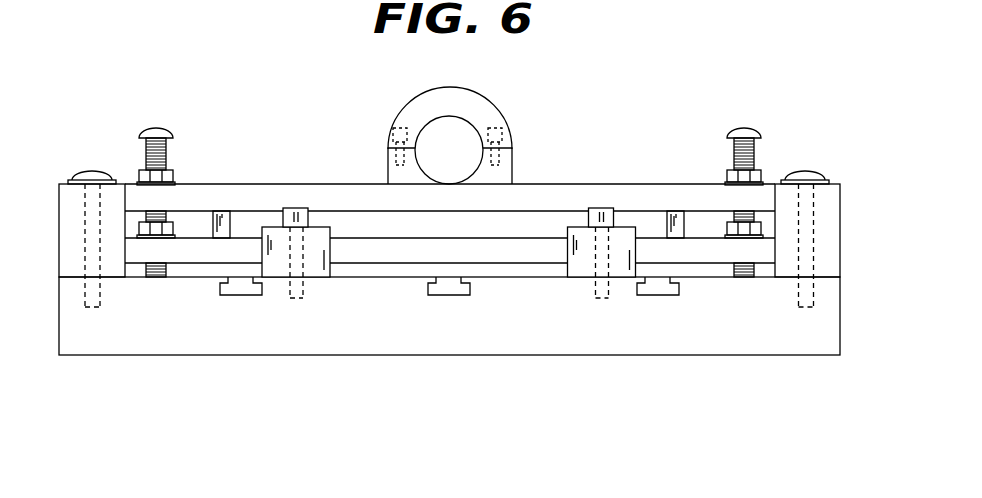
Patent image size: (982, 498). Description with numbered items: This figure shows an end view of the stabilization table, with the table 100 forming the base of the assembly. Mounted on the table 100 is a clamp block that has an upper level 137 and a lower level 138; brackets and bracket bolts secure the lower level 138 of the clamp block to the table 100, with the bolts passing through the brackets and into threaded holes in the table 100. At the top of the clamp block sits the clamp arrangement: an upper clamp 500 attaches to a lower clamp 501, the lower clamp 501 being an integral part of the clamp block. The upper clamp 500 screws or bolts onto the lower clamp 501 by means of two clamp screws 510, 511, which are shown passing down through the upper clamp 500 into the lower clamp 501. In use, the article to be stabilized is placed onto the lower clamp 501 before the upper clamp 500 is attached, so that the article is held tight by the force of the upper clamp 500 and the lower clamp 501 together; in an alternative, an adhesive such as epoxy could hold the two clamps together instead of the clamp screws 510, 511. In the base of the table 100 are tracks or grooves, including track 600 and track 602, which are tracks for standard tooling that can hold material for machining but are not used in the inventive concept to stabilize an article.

The table 100 is at (627, 388).
The upper level 137 is at (657, 192).
The lower level 138 is at (392, 252).
The upper clamp 500 is at (410, 113).
The lower clamp 501 is at (400, 175).
The clamp screw 510 is at (390, 135).
The clamp screw 511 is at (513, 133).
The track 600 is at (242, 297).
The track 602 is at (448, 297).